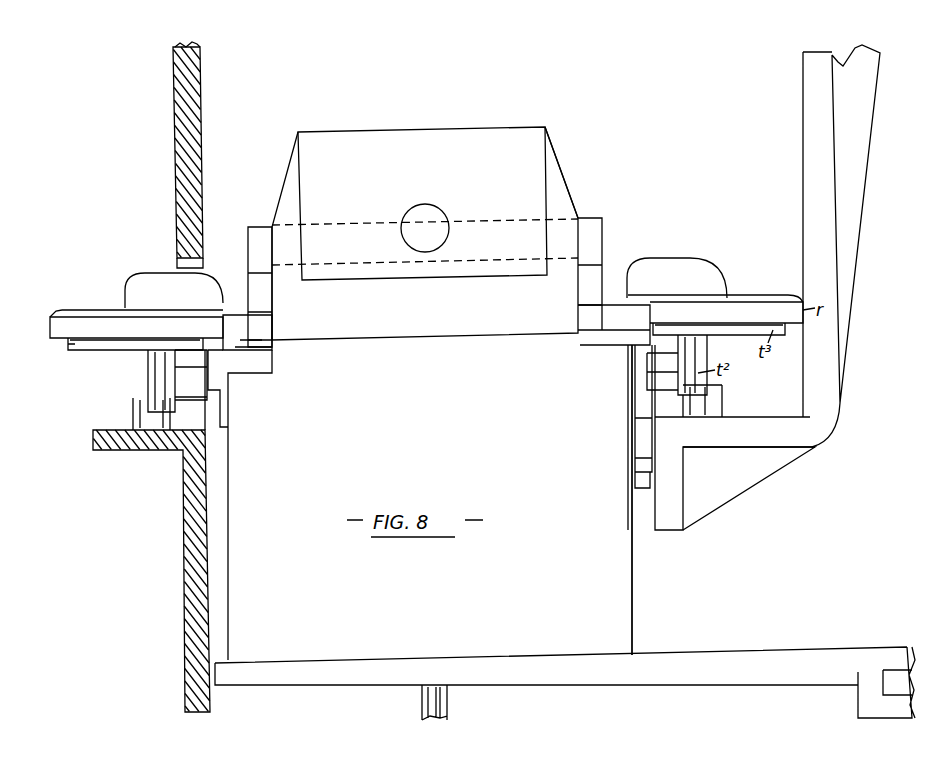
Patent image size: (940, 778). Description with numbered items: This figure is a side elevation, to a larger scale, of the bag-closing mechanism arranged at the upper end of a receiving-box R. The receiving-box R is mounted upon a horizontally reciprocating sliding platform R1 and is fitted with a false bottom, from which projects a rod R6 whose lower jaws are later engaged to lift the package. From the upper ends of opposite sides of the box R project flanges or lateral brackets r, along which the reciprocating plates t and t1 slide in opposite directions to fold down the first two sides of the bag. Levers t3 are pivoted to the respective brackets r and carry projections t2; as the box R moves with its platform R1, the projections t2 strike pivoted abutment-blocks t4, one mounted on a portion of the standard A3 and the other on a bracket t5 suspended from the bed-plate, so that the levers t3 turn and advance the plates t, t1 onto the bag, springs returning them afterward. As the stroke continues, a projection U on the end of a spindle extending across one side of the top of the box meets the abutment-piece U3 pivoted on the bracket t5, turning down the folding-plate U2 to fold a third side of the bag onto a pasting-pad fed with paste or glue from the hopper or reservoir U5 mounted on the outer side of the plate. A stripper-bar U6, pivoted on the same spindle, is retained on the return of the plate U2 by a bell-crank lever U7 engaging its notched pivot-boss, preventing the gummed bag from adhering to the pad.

The standard A3 is at (205, 480).
The reciprocating plate t is at (205, 285).
The reciprocating plate t1 is at (698, 268).
The projection t2 is at (148, 372).
The lever t3 is at (112, 345).
The abutment-block t4 is at (707, 405).
The bracket t5 is at (733, 440).
The flange or lateral bracket r is at (57, 338).
The projection U is at (636, 384).
The folding-plate U2 is at (565, 200).
The abutment-piece U3 is at (635, 435).
The hopper or reservoir U5 is at (530, 157).
The stripper-bar U6 is at (592, 247).
The bell-crank lever U7 is at (268, 367).
The receiving-box R is at (615, 525).
The sliding platform R1 is at (495, 660).
The rod R6 is at (420, 702).